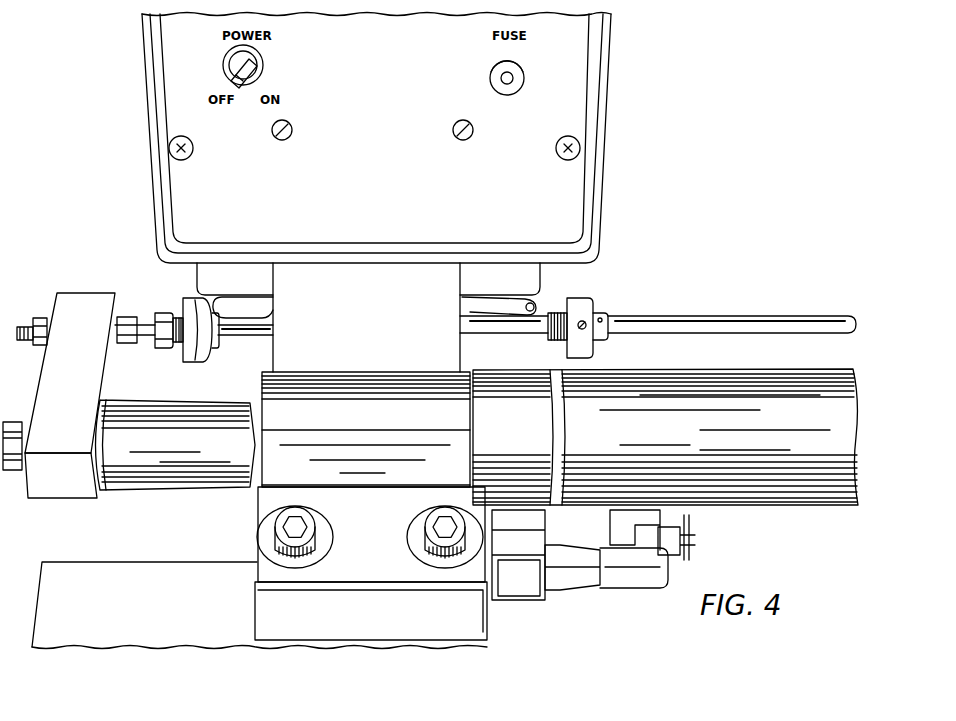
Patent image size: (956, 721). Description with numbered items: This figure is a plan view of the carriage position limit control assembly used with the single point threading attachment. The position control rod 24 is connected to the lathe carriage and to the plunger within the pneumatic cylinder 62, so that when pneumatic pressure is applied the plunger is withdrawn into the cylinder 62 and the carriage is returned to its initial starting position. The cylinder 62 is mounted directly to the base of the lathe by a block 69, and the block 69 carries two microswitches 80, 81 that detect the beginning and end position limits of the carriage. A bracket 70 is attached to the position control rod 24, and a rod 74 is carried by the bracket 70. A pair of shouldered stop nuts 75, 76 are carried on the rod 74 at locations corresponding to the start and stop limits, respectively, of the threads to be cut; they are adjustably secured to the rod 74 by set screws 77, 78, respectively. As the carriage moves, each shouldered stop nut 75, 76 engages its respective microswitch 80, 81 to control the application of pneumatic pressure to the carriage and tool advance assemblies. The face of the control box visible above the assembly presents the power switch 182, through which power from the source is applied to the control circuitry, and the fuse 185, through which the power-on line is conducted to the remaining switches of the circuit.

The position control rod 24 is at (12, 437).
The pneumatic cylinder 62 is at (825, 493).
The block 69 is at (278, 600).
The bracket 70 is at (97, 305).
The rod 74 is at (773, 316).
The shouldered stop nut 75 is at (192, 362).
The shouldered stop nut 76 is at (583, 300).
The set screw 77 is at (163, 312).
The set screw 78 is at (600, 340).
The microswitch 80 is at (255, 275).
The microswitch 81 is at (478, 272).
The switch 182 is at (257, 62).
The fuse 185 is at (487, 65).